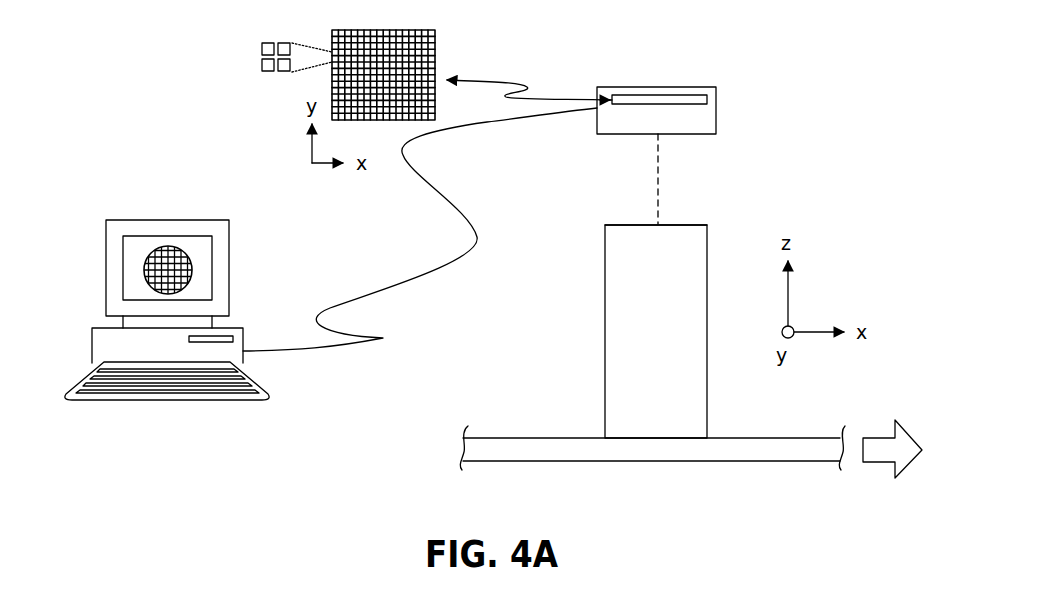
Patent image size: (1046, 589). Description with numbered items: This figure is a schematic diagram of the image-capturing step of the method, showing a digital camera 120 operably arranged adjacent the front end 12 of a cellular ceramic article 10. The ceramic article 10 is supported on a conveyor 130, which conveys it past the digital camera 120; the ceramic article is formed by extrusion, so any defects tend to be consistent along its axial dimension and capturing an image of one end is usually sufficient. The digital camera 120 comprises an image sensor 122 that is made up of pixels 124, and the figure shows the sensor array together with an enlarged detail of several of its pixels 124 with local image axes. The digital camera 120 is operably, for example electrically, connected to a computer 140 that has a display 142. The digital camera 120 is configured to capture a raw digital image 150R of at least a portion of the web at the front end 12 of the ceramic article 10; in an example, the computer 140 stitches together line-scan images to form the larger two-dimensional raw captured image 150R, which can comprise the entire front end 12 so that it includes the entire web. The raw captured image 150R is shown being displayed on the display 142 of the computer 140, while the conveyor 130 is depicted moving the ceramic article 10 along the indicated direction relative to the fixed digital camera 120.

The ceramic article 10 is at (717, 212).
The front end 12 is at (625, 225).
The digital camera 120 is at (716, 102).
The image sensor 122 is at (436, 62).
The pixels 124 is at (262, 50).
The conveyor 130 is at (515, 438).
The computer 140 is at (119, 206).
The display 142 is at (229, 234).
The raw captured image 150R is at (143, 270).